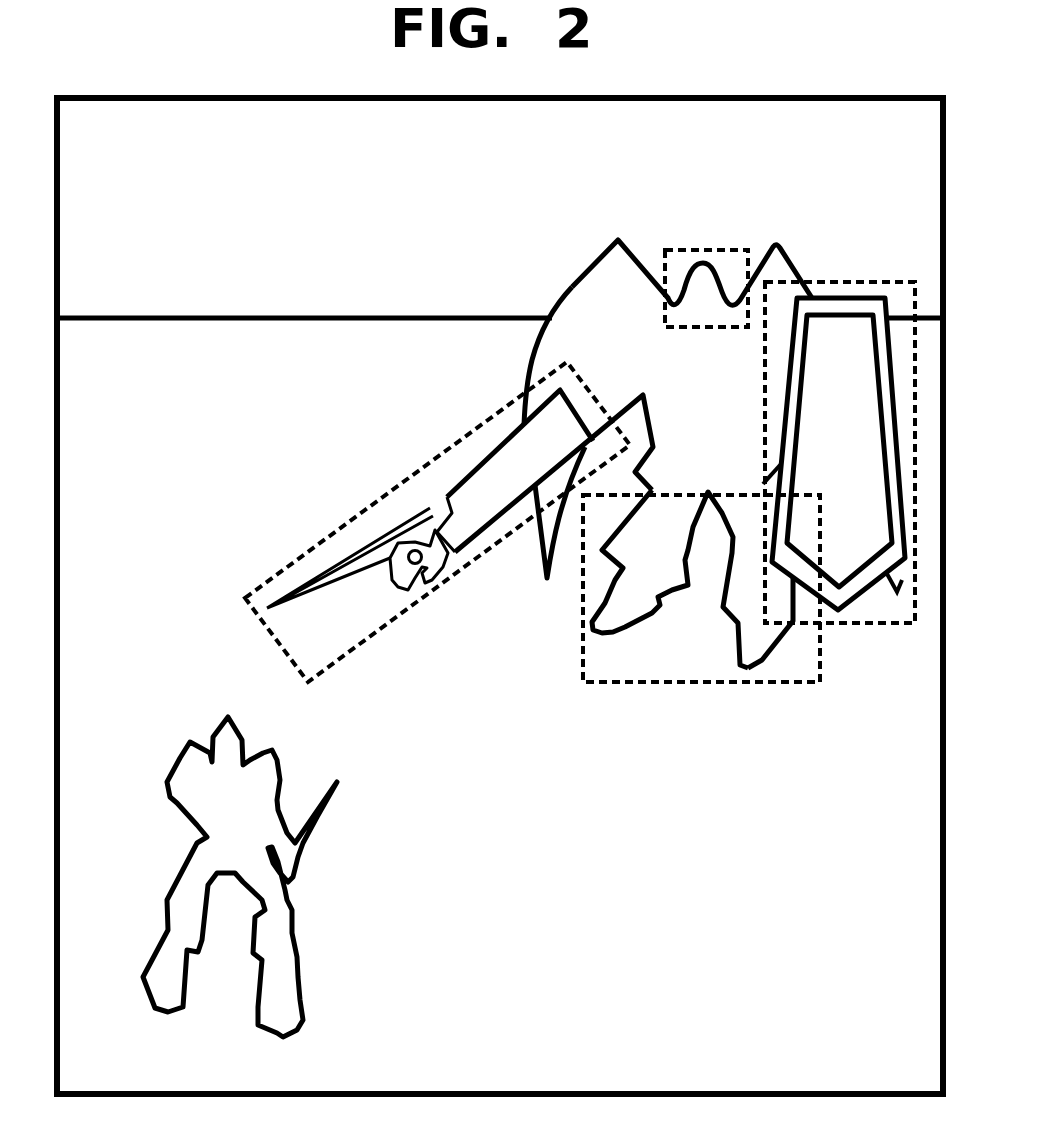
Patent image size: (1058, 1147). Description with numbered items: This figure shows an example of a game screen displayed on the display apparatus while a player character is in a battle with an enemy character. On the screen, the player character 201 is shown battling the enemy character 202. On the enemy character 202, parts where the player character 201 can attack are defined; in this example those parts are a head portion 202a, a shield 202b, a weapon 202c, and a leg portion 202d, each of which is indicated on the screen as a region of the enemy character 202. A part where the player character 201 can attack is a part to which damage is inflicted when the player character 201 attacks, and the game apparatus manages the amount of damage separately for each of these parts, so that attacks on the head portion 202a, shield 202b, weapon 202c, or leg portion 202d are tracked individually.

The player character 201 is at (293, 943).
The enemy character 202 is at (580, 459).
The head portion 202a is at (708, 248).
The shield 202b is at (866, 280).
The weapon 202c is at (415, 605).
The leg portion 202d is at (778, 683).